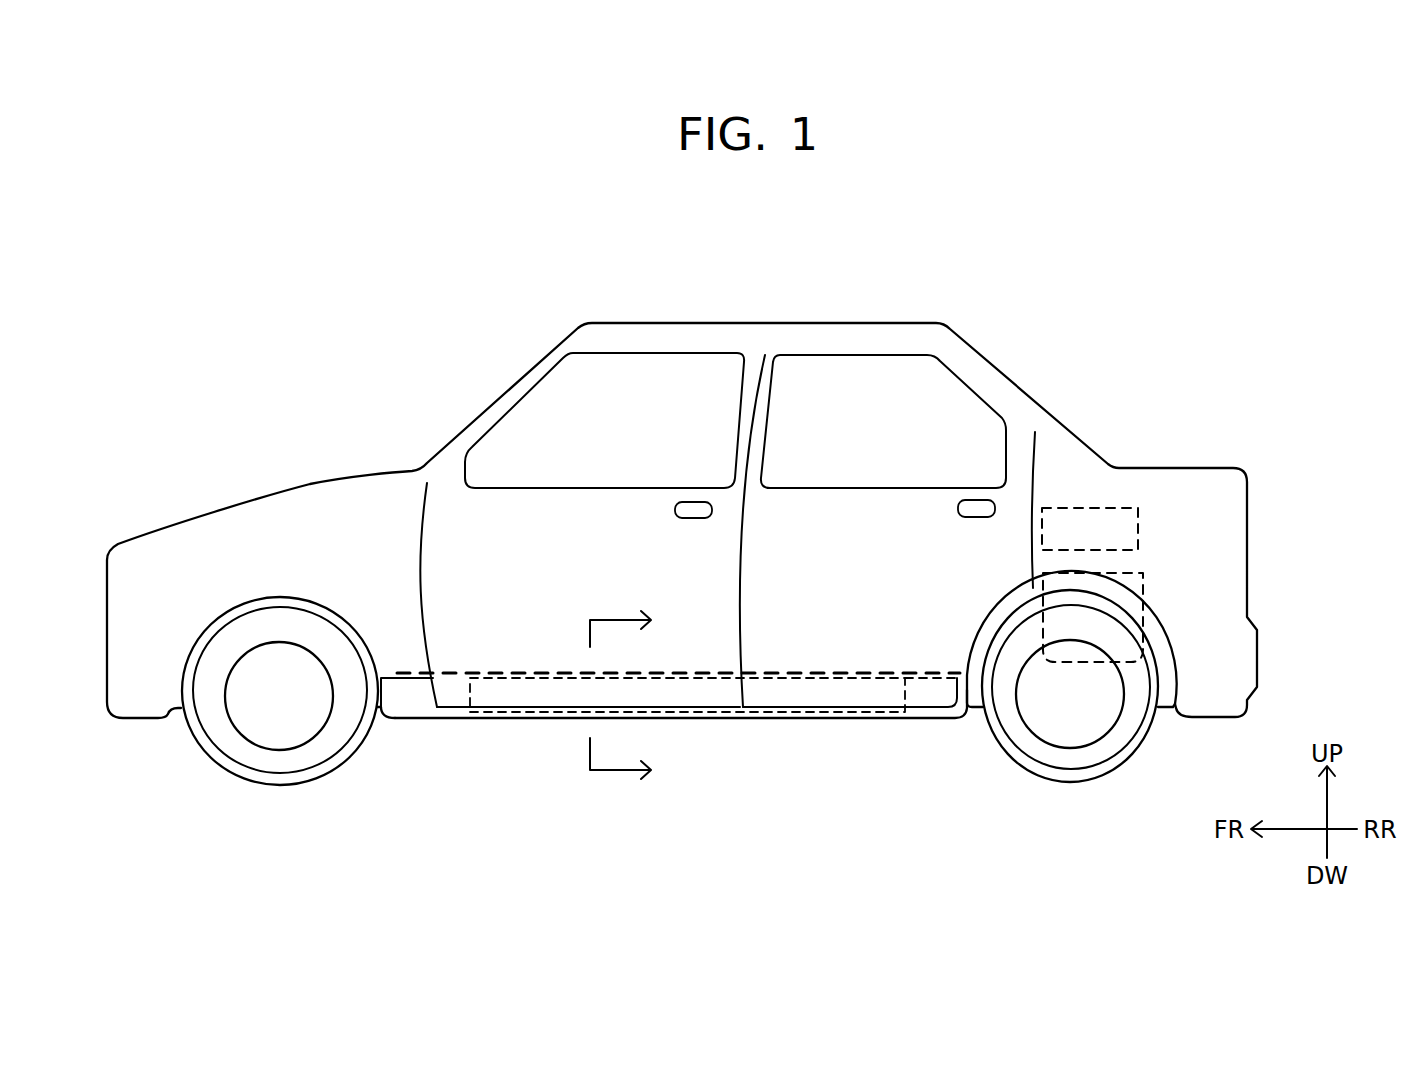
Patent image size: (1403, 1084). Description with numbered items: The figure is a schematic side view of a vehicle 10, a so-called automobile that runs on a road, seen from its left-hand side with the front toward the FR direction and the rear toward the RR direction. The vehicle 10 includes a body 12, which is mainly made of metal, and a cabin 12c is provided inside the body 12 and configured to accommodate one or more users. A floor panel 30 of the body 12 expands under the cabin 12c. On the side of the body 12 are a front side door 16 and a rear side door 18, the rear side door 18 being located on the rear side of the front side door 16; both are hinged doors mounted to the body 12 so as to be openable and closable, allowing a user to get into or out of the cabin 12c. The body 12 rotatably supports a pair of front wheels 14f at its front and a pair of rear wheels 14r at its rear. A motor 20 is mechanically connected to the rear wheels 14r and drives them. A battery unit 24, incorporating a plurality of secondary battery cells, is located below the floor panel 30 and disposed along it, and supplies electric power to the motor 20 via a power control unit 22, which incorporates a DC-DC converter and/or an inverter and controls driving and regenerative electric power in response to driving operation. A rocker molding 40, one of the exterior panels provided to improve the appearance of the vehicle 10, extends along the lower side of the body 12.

The vehicle 10 is at (1192, 312).
The body 12 is at (775, 318).
The cabin 12c is at (557, 420).
The front wheels 14f is at (246, 753).
The rear wheels 14r is at (1072, 760).
The front side door 16 is at (483, 557).
The rear side door 18 is at (895, 537).
The motor 20 is at (1145, 588).
The power control unit 22 is at (1143, 532).
The battery unit 24 is at (805, 693).
The floor panel 30 is at (925, 703).
The rocker molding 40 is at (483, 718).